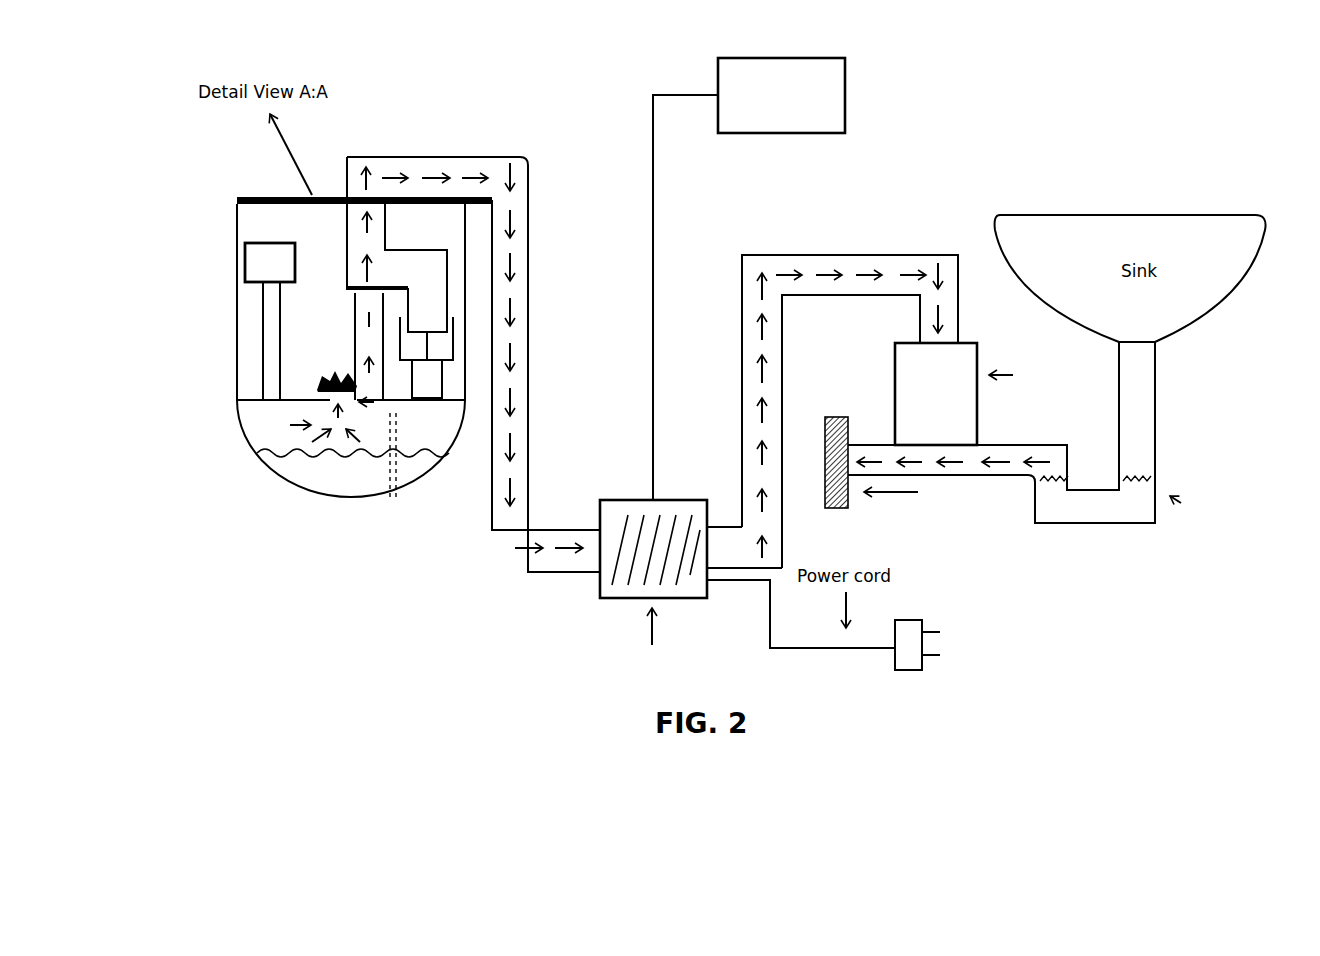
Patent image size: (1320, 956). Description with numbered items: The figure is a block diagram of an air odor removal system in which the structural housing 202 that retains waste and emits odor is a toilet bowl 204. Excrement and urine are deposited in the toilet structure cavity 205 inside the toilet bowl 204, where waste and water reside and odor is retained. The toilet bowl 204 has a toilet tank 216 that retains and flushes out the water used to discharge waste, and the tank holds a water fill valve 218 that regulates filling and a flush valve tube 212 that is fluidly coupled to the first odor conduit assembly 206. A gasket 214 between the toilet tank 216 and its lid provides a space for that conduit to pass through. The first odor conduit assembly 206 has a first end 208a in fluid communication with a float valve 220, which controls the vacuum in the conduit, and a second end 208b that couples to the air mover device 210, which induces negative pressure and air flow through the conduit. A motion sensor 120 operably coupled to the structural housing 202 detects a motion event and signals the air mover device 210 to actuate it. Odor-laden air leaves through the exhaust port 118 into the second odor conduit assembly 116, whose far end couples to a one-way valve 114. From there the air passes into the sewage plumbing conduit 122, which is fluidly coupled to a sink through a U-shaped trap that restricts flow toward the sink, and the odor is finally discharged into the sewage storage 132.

The motion sensor 120 is at (752, 58).
The second odor conduit assembly 116 is at (780, 253).
The one-way valve 114 is at (893, 353).
The sewage storage 132 is at (827, 417).
The exhaust port 118 is at (714, 516).
The sewage plumbing conduit 122 is at (1026, 478).
The first odor conduit assembly 206 is at (508, 155).
The first end of the first odor conduit assembly 208a is at (343, 190).
The second end of the first odor conduit assembly 208b is at (587, 527).
The air mover device 210 is at (659, 394).
The structural housing 202 is at (226, 425).
The toilet bowl 204 is at (237, 405).
The toilet structure cavity 205 is at (298, 441).
The flush valve tube 212 is at (338, 337).
The gasket 214 is at (257, 197).
The toilet tank 216 is at (238, 320).
The water fill valve 218 is at (232, 263).
The float valve 220 is at (428, 408).